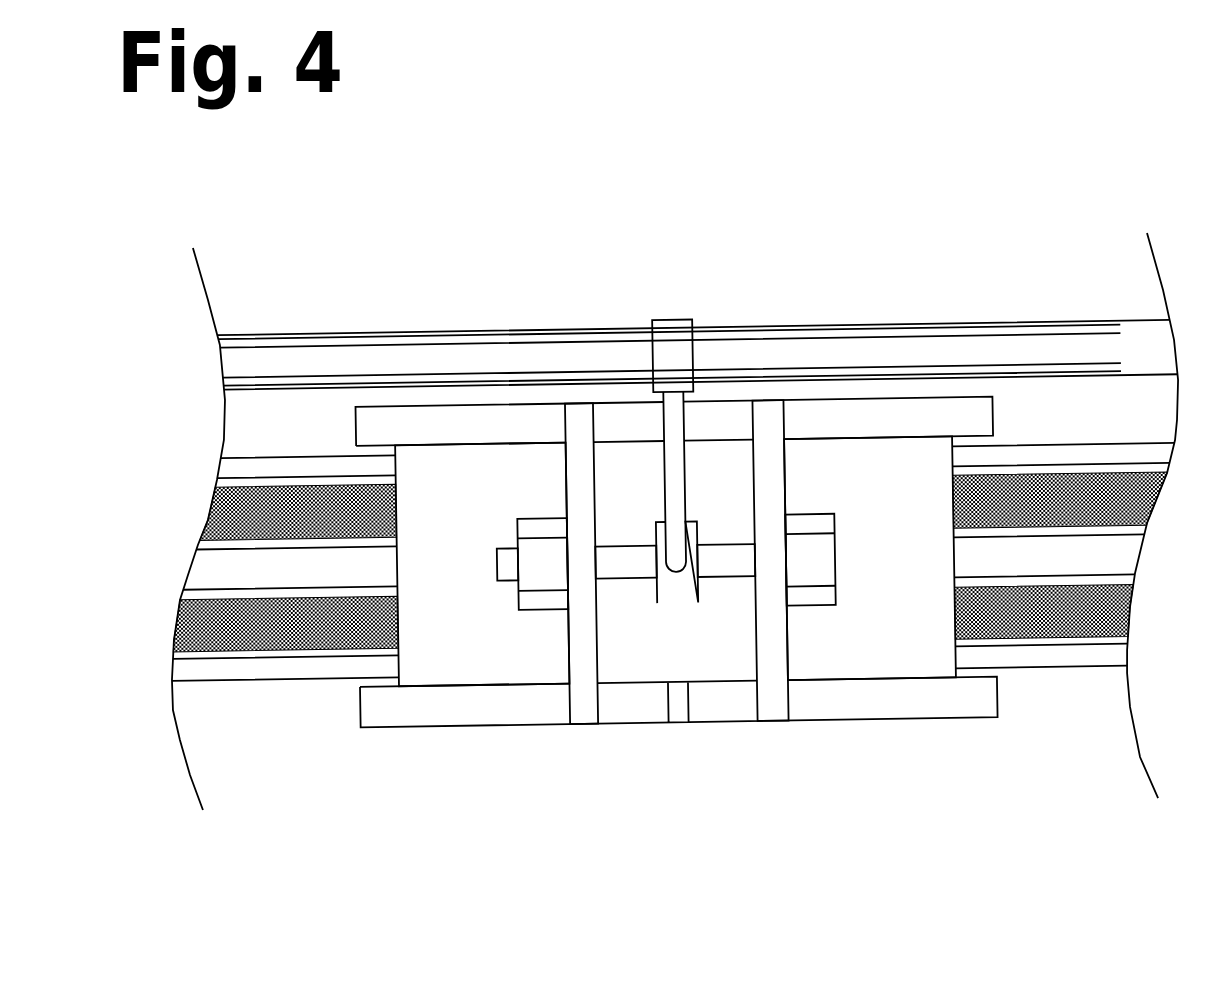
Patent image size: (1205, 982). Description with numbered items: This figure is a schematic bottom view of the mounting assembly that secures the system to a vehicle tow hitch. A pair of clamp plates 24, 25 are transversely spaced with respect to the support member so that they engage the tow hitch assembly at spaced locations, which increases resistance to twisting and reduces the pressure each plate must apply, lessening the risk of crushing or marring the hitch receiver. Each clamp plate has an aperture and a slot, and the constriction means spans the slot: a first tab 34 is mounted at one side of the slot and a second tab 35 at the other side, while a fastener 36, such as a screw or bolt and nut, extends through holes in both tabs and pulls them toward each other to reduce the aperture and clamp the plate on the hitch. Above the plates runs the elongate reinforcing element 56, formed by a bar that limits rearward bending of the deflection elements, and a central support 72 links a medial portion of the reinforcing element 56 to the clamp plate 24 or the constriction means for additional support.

The reinforcing element 56 is at (453, 354).
The central support 72 is at (674, 452).
The clamp plate 24 is at (887, 420).
The clamp plate 25 is at (873, 700).
The first tab 34 is at (766, 632).
The second tab 35 is at (577, 634).
The fastener 36 is at (723, 559).